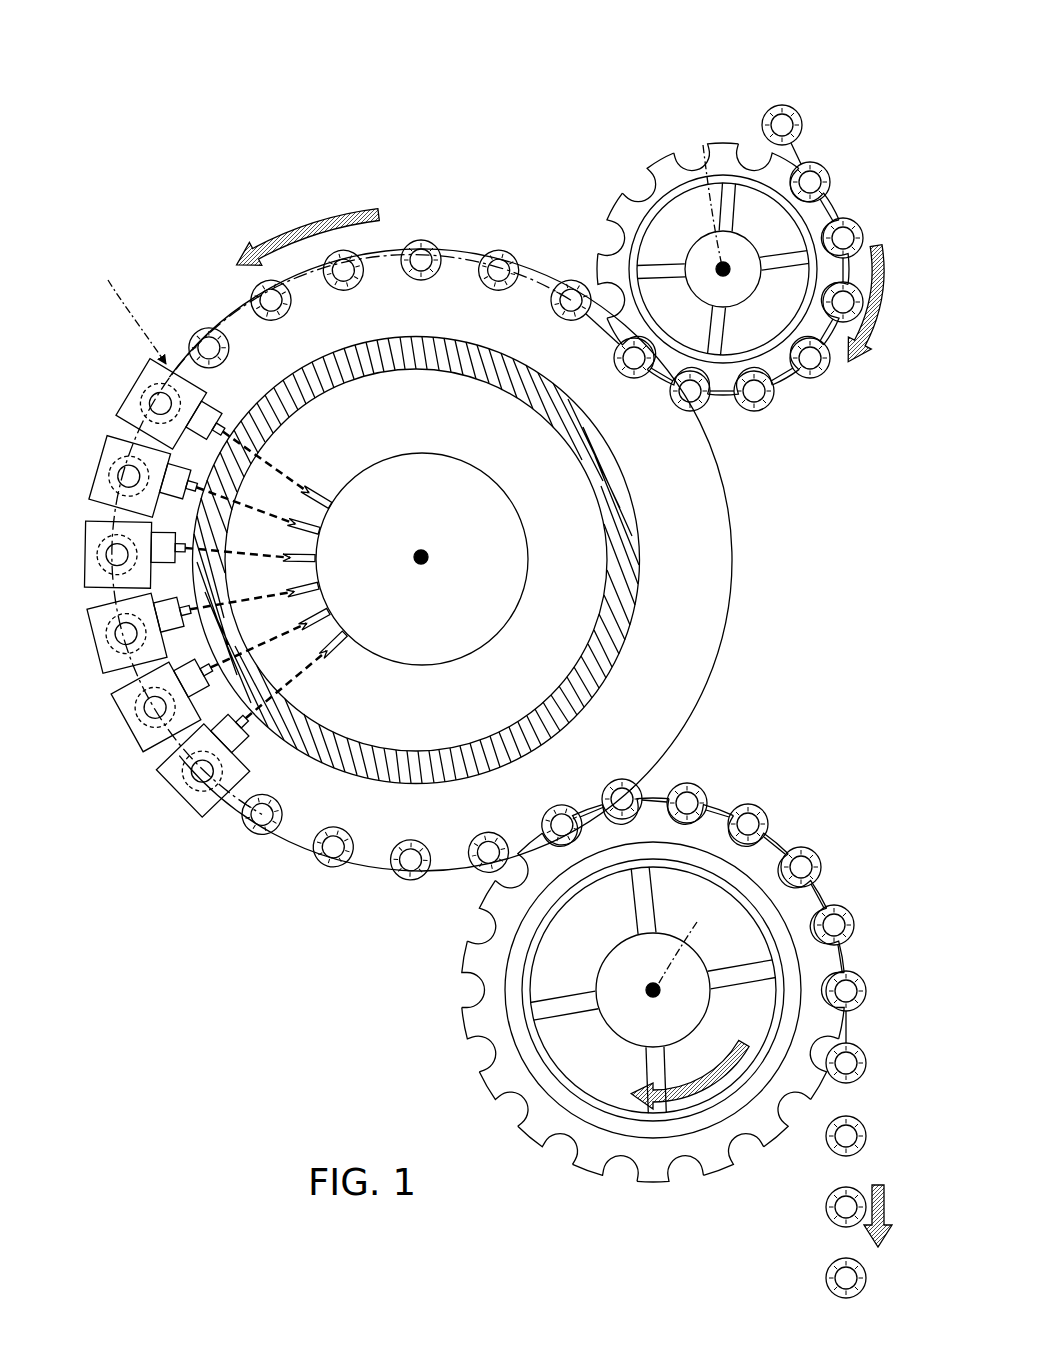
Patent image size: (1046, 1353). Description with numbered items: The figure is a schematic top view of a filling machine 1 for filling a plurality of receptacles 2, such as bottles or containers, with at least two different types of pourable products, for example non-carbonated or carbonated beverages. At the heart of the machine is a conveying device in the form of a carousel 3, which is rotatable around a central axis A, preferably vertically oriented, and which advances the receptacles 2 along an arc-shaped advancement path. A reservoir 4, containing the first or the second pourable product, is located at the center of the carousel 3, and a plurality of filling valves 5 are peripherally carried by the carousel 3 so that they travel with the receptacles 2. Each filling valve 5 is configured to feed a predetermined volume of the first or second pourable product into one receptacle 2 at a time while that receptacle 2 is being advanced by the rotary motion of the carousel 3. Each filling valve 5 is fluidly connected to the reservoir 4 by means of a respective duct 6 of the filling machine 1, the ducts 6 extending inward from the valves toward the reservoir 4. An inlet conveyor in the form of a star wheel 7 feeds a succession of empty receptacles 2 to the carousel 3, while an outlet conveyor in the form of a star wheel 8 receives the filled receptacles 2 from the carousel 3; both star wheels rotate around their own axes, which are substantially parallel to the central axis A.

The filling machine 1 is at (482, 110).
The receptacles 2 is at (418, 260).
The carousel 3 is at (222, 294).
The reservoir 4 is at (428, 495).
The filling valves 5 is at (112, 404).
The duct 6 is at (278, 458).
The star wheel 7 is at (618, 208).
The star wheel 8 is at (766, 1118).
The central axis A is at (427, 556).